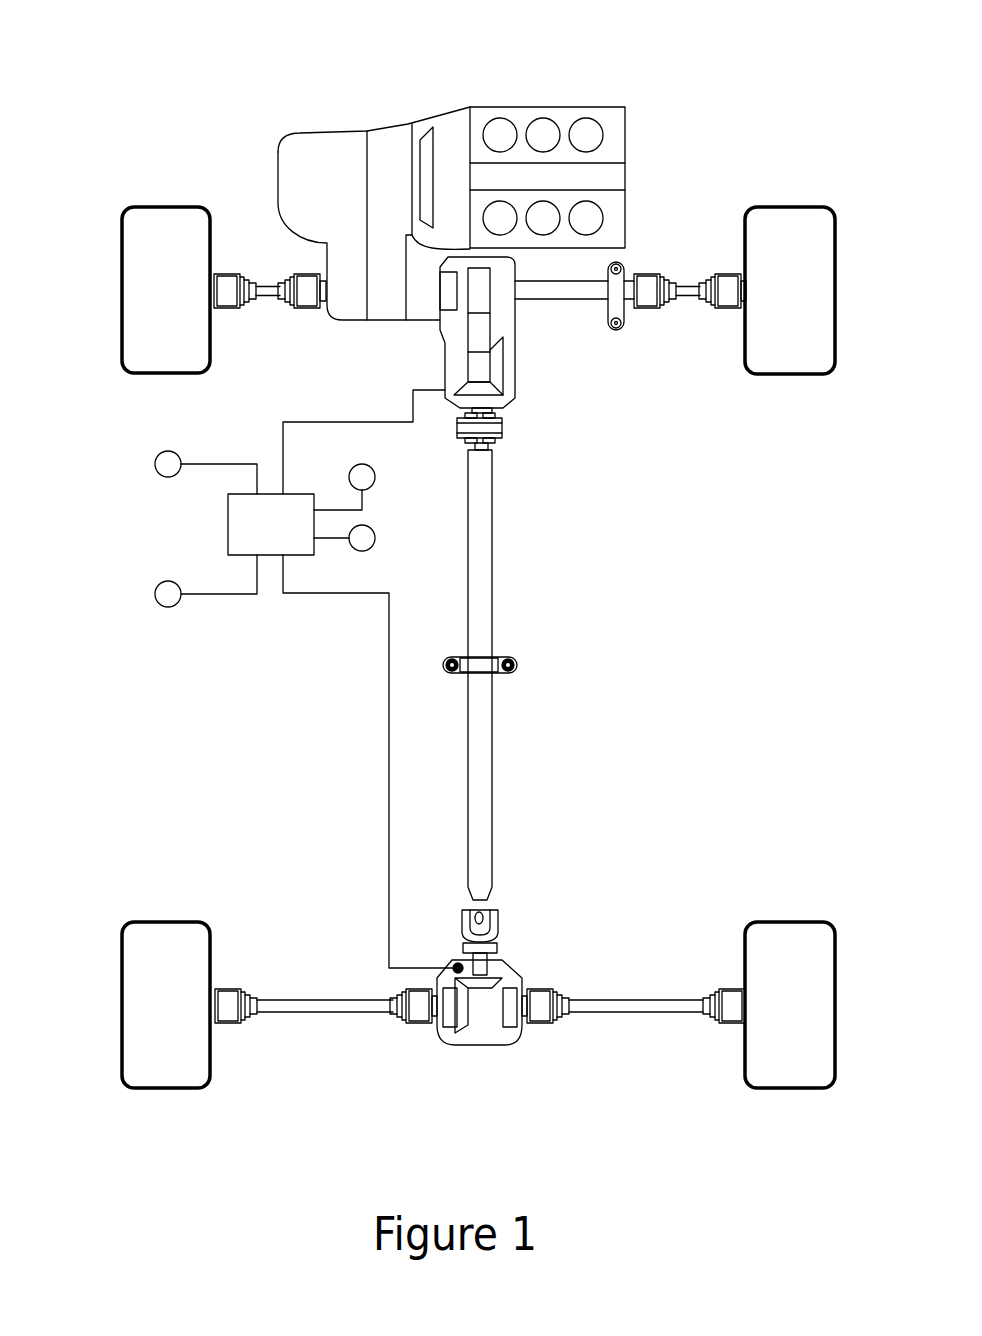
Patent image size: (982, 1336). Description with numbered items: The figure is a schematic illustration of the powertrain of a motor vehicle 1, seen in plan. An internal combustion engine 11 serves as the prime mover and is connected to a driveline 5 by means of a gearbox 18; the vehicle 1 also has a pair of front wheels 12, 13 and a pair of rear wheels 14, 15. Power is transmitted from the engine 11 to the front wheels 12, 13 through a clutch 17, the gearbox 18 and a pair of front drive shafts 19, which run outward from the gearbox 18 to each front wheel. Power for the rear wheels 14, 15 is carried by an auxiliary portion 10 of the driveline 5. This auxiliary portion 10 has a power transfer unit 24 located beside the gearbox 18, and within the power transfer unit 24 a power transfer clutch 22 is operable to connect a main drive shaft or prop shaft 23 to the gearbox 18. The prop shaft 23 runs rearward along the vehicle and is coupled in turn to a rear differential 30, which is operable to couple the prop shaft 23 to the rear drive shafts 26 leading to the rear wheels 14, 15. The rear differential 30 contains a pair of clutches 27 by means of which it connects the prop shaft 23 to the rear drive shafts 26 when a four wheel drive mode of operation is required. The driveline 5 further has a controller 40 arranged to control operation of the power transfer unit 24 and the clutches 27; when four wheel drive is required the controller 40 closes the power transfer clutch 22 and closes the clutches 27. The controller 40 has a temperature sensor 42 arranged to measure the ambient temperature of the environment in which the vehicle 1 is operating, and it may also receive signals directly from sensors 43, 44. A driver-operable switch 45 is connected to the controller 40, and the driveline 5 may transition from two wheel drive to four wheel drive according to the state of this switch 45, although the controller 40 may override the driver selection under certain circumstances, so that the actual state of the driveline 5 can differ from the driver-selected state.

The motor vehicle 1 is at (833, 62).
The driveline 5 is at (92, 573).
The auxiliary portion 10 is at (415, 616).
The internal combustion engine 11 is at (617, 135).
The front wheel 12 is at (155, 225).
The front wheel 13 is at (798, 225).
The rear wheel 14 is at (155, 1072).
The rear wheel 15 is at (775, 1072).
The clutch 17 is at (465, 189).
The gearbox 18 is at (387, 152).
The front drive shaft 19 is at (267, 293).
The power transfer clutch 22 is at (450, 292).
The prop shaft 23 is at (483, 568).
The power transfer unit 24 is at (515, 340).
The rear drive shaft 26 is at (337, 1005).
The clutch 27 is at (440, 1040).
The rear differential 30 is at (455, 1055).
The controller 40 is at (227, 525).
The temperature sensor 42 is at (163, 449).
The sensor 43 is at (377, 472).
The sensor 44 is at (377, 533).
The driver-operable switch 45 is at (163, 608).